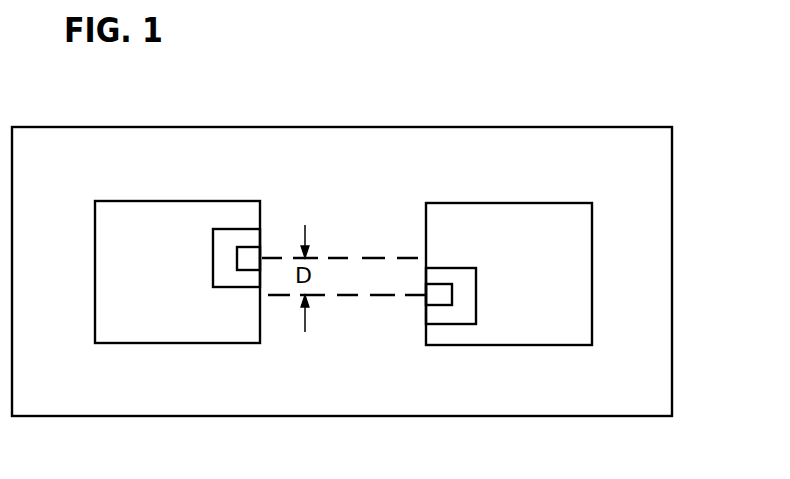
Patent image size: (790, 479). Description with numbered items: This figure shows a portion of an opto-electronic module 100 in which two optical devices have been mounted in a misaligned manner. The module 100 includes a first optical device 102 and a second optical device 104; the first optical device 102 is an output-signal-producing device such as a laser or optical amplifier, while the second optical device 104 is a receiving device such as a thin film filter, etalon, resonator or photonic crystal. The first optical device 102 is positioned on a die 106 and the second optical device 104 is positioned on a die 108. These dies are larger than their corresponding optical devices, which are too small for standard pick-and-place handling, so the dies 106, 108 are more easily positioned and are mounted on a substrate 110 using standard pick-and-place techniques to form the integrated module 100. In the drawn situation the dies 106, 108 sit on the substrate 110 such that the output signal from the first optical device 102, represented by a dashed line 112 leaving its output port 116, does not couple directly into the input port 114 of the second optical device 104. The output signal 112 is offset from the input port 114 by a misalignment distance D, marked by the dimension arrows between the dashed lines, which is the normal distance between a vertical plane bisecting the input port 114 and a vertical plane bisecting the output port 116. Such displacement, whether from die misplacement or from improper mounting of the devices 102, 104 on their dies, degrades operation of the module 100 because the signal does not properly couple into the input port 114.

The opto-electronic module 100 is at (88, 107).
The first optical device 102 is at (233, 289).
The second optical device 104 is at (478, 292).
The die 106 is at (148, 200).
The die 108 is at (542, 203).
The substrate 110 is at (673, 329).
The output signal 112 is at (372, 257).
The input port 114 is at (434, 306).
The output port 116 is at (248, 246).